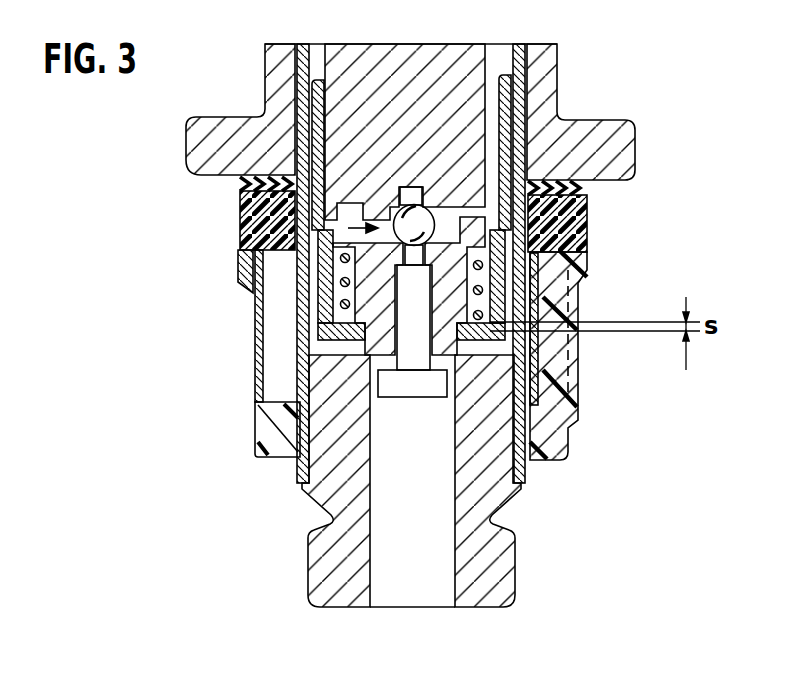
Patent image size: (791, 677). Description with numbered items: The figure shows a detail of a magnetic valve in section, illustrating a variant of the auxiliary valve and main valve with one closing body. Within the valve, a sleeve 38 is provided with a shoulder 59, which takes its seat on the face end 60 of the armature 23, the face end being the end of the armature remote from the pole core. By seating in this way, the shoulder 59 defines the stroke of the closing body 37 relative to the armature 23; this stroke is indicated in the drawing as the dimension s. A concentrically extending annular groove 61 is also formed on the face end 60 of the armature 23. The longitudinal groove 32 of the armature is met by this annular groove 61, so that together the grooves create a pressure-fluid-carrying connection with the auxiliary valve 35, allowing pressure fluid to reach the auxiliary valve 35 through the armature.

The armature 23 is at (418, 62).
The longitudinal groove 32 is at (490, 102).
The sleeve 38 is at (508, 117).
The face end 60 is at (542, 177).
The annular groove 61 is at (332, 223).
The auxiliary valve 35 is at (250, 238).
The closing body 37 is at (333, 298).
The shoulder 59 is at (505, 222).